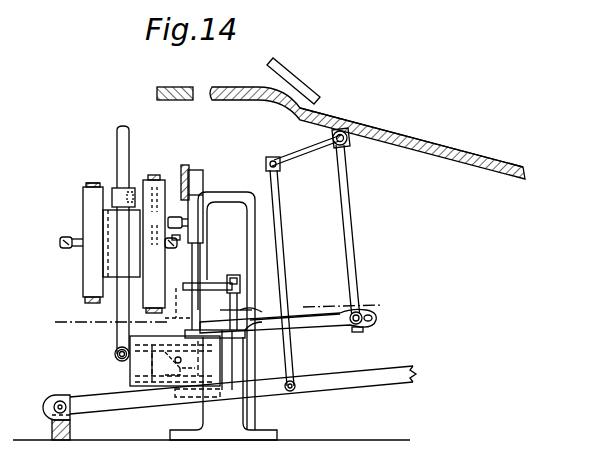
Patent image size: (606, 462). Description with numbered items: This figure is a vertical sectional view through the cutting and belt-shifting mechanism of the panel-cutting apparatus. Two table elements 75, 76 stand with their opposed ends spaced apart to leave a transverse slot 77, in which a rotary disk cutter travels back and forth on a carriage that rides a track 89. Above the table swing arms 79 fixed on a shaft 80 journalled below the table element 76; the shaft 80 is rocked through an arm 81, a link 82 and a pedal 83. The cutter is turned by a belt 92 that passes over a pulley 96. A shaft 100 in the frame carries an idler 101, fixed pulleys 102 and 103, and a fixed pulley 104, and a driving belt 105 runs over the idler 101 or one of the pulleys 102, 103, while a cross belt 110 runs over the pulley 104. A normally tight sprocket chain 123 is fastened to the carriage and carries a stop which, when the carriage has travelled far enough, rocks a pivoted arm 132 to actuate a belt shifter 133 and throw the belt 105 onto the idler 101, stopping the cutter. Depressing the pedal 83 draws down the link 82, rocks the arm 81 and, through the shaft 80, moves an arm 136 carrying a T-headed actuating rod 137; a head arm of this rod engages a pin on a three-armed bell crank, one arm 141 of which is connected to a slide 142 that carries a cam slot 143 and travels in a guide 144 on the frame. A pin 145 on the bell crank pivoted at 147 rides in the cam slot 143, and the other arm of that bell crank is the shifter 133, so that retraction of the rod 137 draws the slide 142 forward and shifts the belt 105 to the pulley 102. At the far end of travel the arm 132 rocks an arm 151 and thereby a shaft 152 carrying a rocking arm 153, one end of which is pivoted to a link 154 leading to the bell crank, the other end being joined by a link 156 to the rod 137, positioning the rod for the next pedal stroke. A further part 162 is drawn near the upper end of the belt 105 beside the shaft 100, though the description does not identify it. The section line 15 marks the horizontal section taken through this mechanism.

The section line 15 is at (382, 304).
The table element 75 is at (168, 87).
The table element 76 is at (443, 147).
The transverse slot 77 is at (205, 90).
The arm 79 is at (290, 86).
The shaft 80 is at (348, 144).
The arm 81 is at (305, 157).
The link 82 is at (283, 264).
The pedal 83 is at (373, 388).
The track 89 is at (187, 166).
The belt 92 is at (152, 178).
The pulley 96 is at (163, 184).
The shaft 100 is at (80, 238).
The idler 101 is at (117, 281).
The fixed pulley 102 is at (108, 245).
The fixed pulley 103 is at (132, 260).
The fixed pulley 104 is at (83, 201).
The driving belt 105 is at (126, 143).
The cross belt 110 is at (95, 183).
The sprocket chain 123 is at (175, 217).
The pivoted arm 132 is at (198, 268).
The belt shifter 133 is at (118, 332).
The arm 136 is at (358, 243).
The T-headed actuating rod 137 is at (323, 327).
The arm 141 is at (228, 340).
The slide 142 is at (150, 373).
The cam slot 143 is at (150, 353).
The guide 144 is at (148, 380).
The pin 145 is at (184, 360).
The pivot 147 is at (115, 355).
The arm 151 is at (202, 290).
The shaft 152 is at (245, 289).
The rocking arm 153 is at (246, 313).
The link 154 is at (188, 332).
The link 156 is at (280, 326).
The collar 162 is at (108, 208).